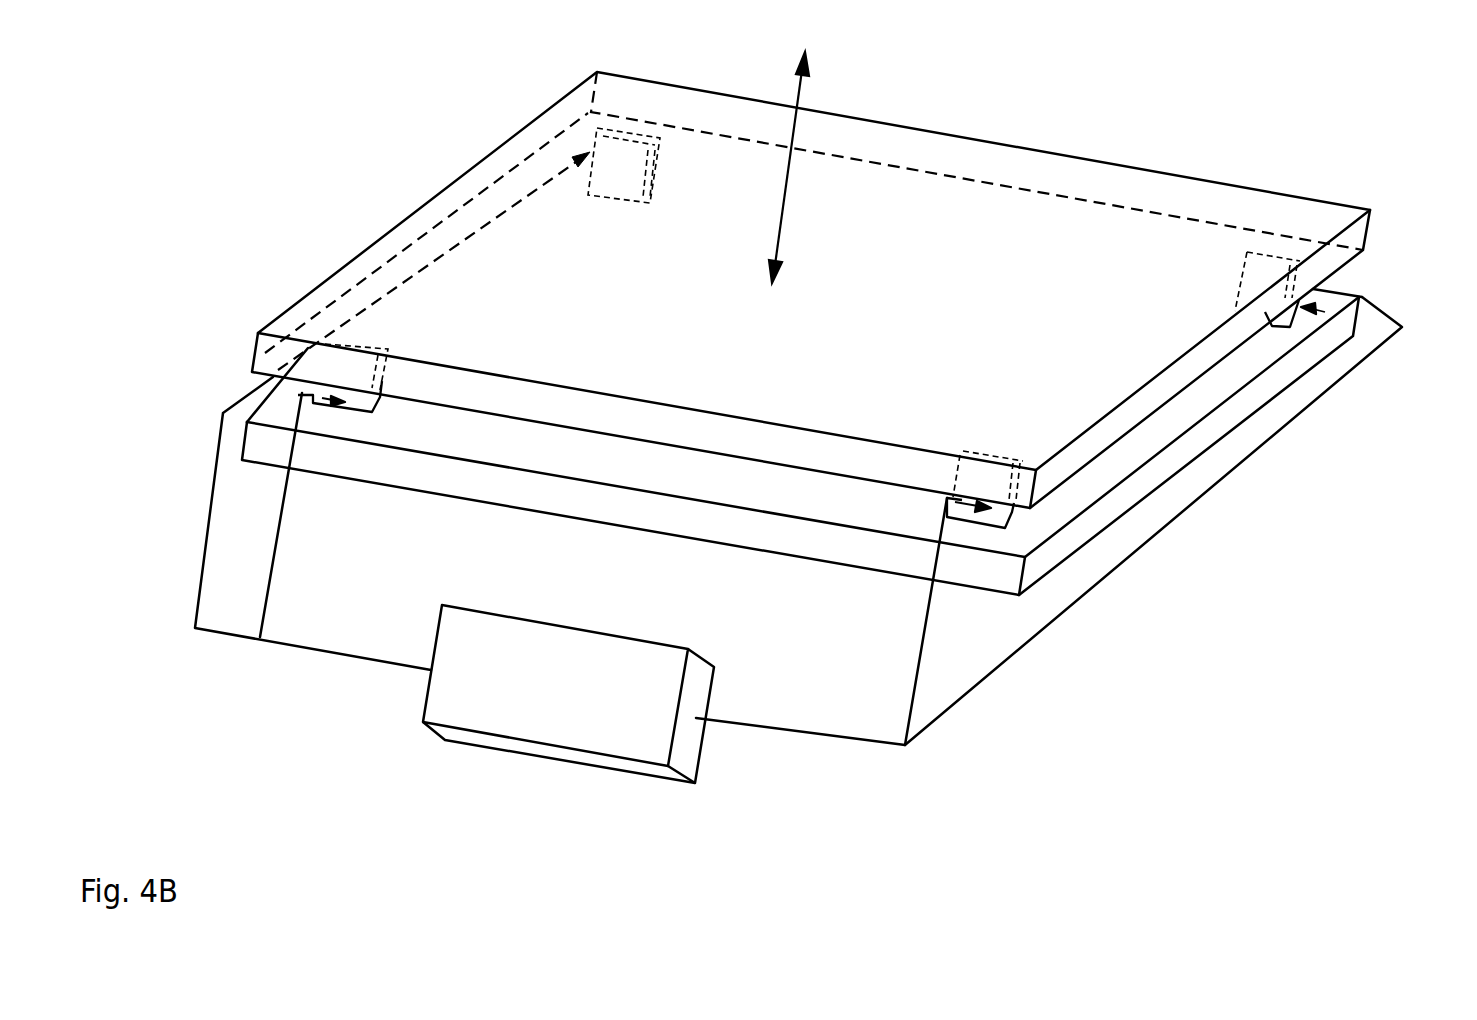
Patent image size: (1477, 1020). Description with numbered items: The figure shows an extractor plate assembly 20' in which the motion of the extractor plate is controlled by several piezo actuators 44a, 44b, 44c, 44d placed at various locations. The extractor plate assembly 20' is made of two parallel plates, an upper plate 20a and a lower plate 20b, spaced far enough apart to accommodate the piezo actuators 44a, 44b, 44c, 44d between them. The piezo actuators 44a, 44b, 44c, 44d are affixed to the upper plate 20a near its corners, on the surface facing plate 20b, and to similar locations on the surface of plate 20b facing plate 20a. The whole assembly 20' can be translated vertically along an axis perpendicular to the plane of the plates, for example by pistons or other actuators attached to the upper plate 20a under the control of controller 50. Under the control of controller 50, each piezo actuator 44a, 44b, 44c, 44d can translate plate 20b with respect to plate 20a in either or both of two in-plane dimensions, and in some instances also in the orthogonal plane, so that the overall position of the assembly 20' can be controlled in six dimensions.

The extractor plate assembly 20' is at (798, 398).
The upper plate 20a is at (873, 133).
The plate 20b is at (697, 523).
The piezo actuator 44a is at (347, 363).
The piezo actuator 44b is at (620, 190).
The piezo actuator 44c is at (1000, 516).
The piezo actuator 44d is at (1272, 305).
The controller 50 is at (570, 728).